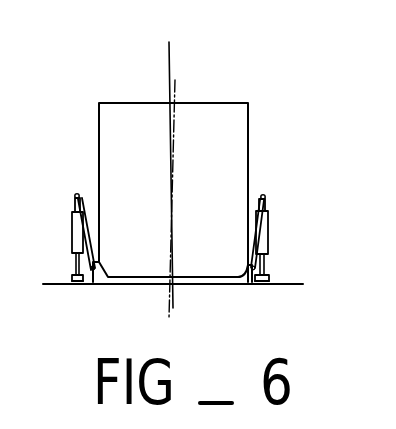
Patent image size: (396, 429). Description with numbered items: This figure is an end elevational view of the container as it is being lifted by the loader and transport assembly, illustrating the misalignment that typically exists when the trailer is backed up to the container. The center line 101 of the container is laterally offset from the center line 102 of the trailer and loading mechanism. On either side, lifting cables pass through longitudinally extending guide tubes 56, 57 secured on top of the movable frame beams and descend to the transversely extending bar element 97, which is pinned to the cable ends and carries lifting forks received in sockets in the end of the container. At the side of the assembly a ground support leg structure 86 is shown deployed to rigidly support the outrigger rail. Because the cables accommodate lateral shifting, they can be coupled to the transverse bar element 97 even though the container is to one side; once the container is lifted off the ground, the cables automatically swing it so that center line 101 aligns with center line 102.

The guide tube 56 is at (77, 193).
The guide tube 57 is at (266, 194).
The ground support leg structure 86 is at (275, 268).
The transversely extending bar element 97 is at (207, 275).
The center line of the container 101 is at (170, 185).
The center line of the trailer and loading mechanism 102 is at (170, 116).